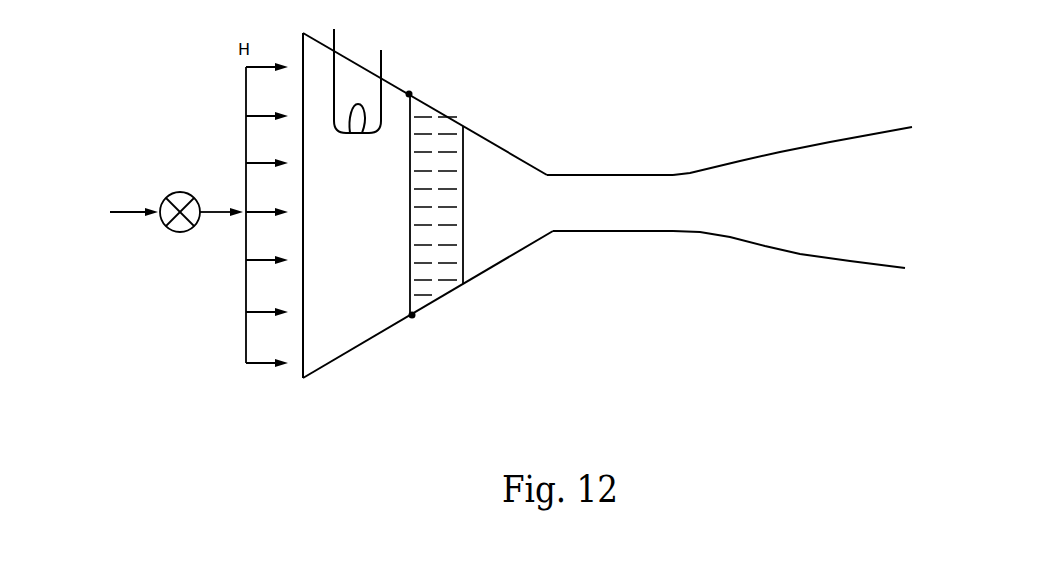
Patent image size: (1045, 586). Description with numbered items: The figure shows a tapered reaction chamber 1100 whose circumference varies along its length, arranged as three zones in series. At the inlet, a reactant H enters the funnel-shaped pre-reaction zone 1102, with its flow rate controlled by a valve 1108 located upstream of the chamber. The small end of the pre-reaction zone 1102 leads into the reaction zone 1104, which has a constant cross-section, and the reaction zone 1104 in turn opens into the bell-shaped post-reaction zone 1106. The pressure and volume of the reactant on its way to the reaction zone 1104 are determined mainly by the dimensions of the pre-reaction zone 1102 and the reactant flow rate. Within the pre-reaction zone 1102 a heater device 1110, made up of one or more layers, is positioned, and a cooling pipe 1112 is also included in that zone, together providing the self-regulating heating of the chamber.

The tapered reaction chamber 1100 is at (607, 242).
The pre-reaction zone 1102 is at (553, 363).
The reaction zone 1104 is at (657, 242).
The post-reaction zone 1106 is at (900, 278).
The valve 1108 is at (176, 192).
The heater device 1110 is at (438, 118).
The cooling pipe 1112 is at (381, 60).